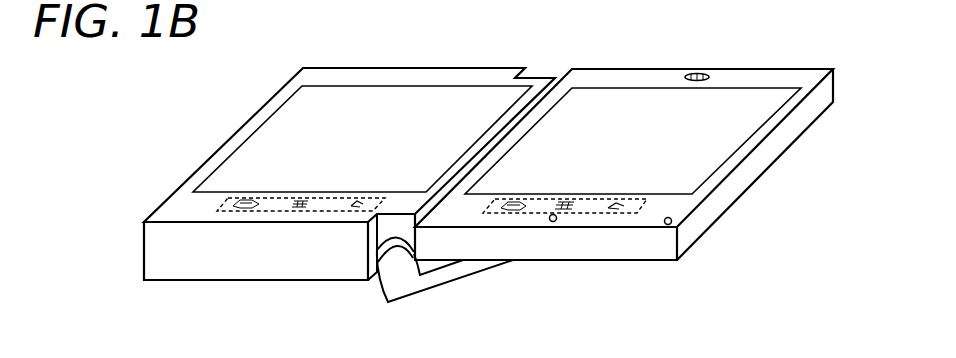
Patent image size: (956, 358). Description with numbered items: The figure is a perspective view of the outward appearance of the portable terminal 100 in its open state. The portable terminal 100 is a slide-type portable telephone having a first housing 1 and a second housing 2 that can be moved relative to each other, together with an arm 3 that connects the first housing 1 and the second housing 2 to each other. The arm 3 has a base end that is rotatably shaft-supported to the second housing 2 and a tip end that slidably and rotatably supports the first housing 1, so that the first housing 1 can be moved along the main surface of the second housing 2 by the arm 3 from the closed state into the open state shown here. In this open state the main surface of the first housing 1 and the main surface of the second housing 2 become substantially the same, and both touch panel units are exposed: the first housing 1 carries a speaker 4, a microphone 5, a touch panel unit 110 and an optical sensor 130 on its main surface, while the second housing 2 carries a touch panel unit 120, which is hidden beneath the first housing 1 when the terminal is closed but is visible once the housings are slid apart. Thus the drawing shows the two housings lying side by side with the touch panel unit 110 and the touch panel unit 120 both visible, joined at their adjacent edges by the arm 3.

The portable terminal 100 is at (488, 182).
The first housing 1 is at (624, 173).
The second housing 2 is at (349, 201).
The arm 3 is at (413, 285).
The speaker 4 is at (698, 74).
The microphone 5 is at (549, 218).
The touch panel unit 110 is at (687, 152).
The touch panel unit 120 is at (303, 123).
The optical sensor 130 is at (675, 227).